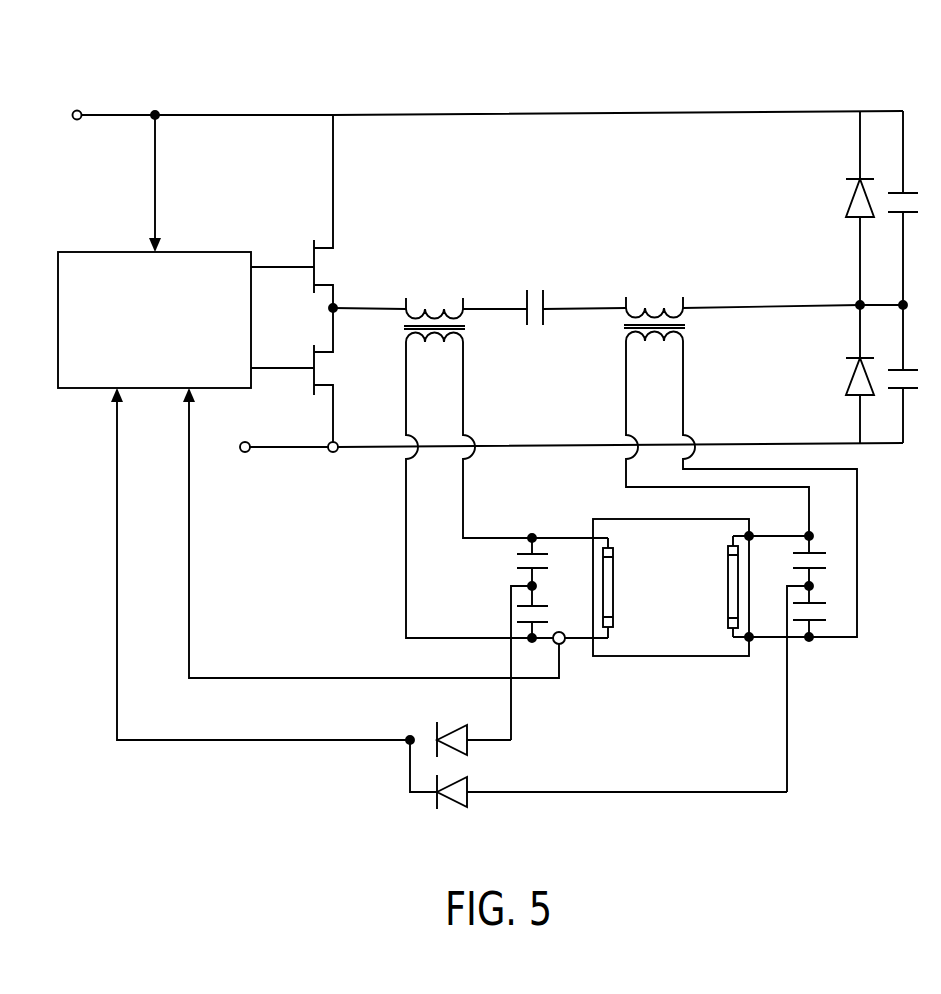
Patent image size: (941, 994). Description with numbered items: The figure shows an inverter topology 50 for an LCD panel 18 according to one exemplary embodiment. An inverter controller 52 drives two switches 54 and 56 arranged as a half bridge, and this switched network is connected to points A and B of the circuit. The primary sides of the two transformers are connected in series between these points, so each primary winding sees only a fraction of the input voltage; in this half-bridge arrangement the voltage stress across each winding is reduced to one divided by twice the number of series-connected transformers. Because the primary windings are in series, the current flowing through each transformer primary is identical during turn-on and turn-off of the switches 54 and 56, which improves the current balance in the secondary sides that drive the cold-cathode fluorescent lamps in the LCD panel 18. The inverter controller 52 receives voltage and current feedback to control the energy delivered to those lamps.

The inverter topology 50 is at (334, 70).
The inverter controller 52 is at (202, 252).
The switch 54 is at (330, 268).
The switch 56 is at (330, 372).
The LCD panel 18 is at (615, 519).